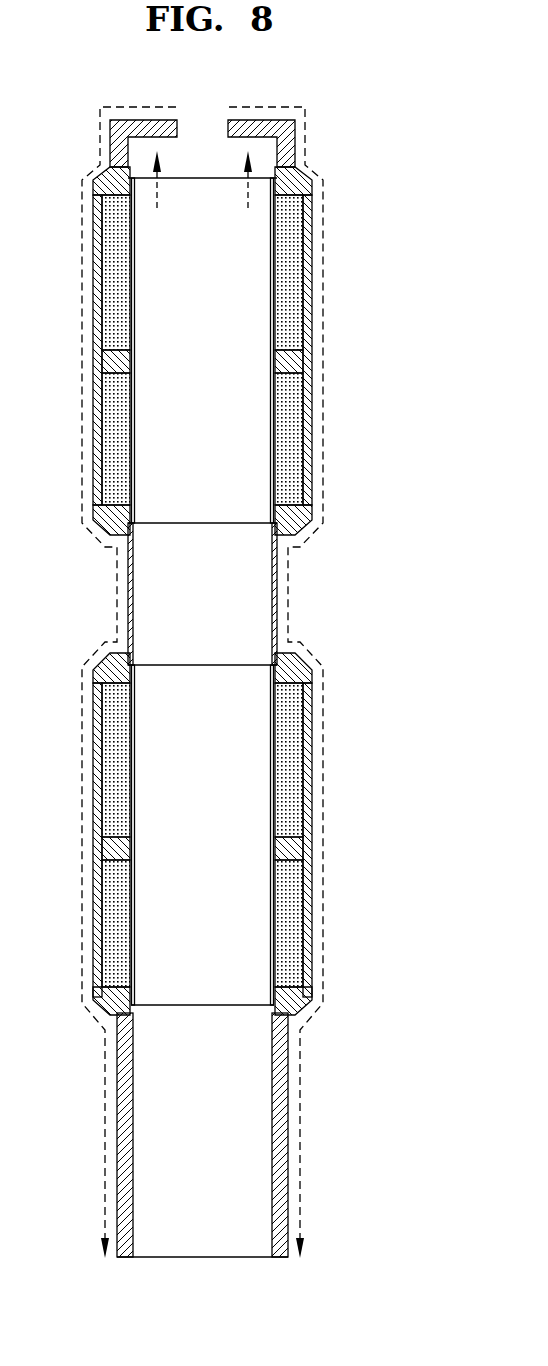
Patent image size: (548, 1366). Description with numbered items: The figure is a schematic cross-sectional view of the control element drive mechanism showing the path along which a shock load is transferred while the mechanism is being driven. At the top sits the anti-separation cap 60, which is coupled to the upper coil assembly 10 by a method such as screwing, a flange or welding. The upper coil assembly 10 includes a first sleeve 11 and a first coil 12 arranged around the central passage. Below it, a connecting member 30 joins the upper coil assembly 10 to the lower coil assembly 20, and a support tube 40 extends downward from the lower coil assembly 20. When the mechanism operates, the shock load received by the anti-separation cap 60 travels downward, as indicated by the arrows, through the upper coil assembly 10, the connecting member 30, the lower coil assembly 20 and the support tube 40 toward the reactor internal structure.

The upper coil assembly 10 is at (334, 300).
The first sleeve 11 is at (274, 430).
The first coil 12 is at (274, 727).
The lower coil assembly 20 is at (334, 806).
The connecting member 30 is at (277, 590).
The support tube 40 is at (280, 1092).
The anti-separation cap 60 is at (290, 138).